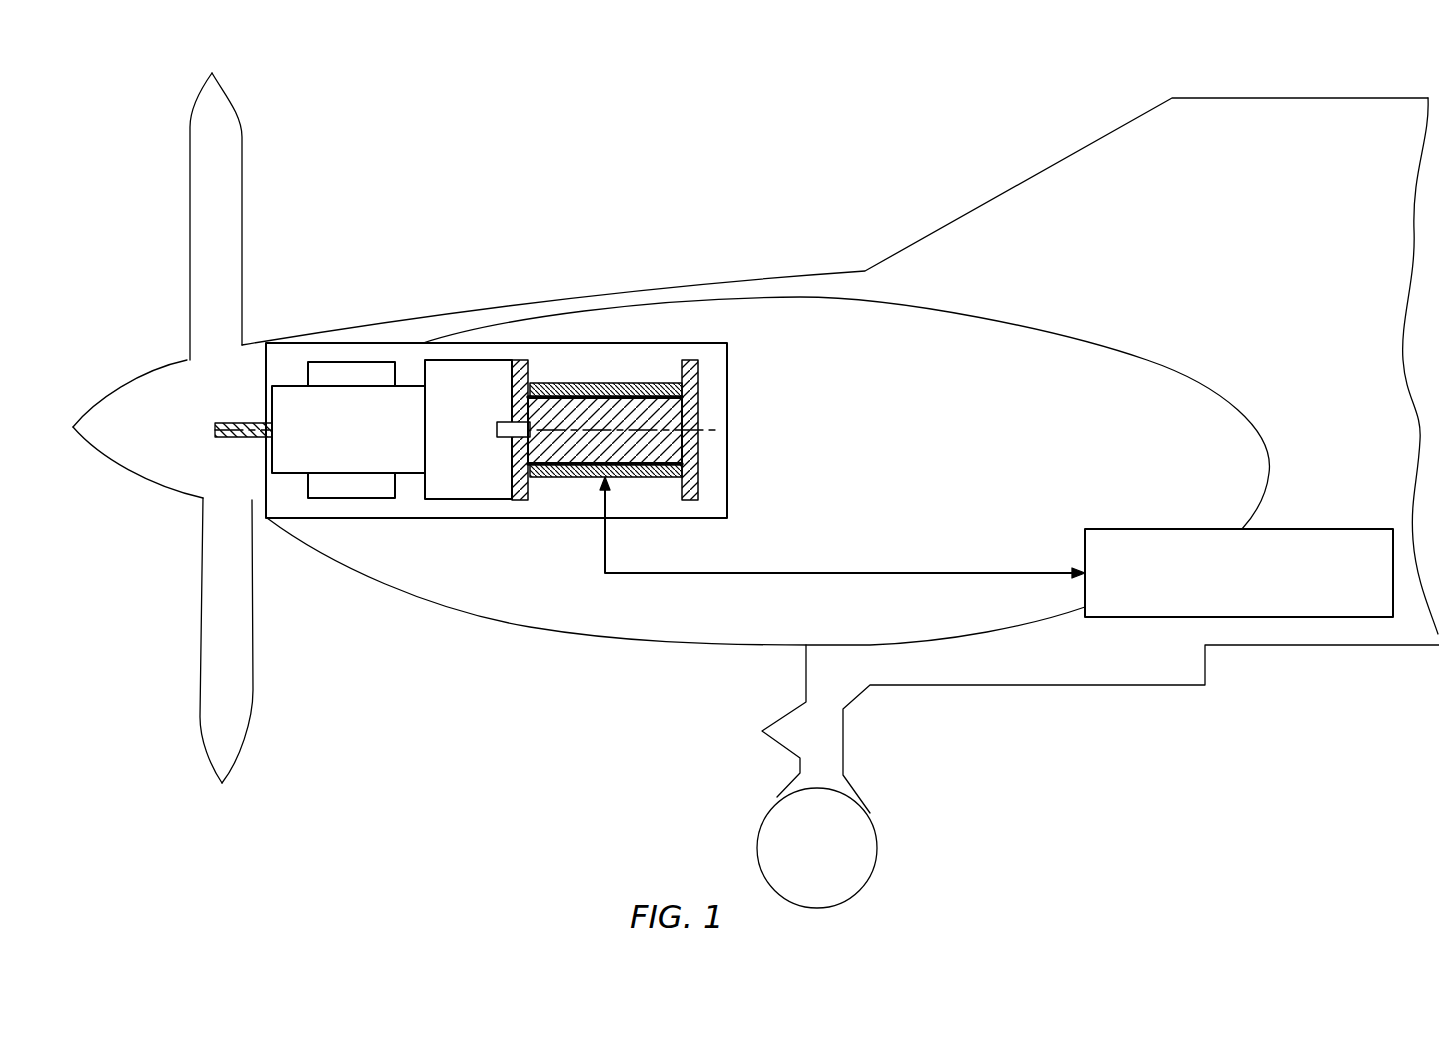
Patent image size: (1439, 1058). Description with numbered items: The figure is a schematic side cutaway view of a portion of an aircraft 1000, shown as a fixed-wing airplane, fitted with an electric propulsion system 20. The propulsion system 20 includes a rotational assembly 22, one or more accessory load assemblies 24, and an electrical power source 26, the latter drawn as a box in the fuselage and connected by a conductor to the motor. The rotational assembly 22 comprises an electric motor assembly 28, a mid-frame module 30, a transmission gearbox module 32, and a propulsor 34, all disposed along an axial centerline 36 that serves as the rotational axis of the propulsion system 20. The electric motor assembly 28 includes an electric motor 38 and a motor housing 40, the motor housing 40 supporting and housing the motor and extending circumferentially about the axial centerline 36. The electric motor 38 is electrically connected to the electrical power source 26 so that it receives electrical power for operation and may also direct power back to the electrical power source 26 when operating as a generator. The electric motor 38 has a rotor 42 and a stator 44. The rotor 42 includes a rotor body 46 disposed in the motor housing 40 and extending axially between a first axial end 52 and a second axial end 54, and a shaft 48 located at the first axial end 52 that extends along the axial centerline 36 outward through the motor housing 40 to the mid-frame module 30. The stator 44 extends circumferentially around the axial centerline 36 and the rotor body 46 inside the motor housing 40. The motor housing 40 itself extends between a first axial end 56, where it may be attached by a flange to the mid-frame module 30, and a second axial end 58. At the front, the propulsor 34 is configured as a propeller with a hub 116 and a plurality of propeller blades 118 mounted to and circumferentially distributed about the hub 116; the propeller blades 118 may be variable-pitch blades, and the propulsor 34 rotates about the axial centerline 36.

The aircraft 1000 is at (756, 487).
The hub 116 is at (170, 390).
The propeller blades 118 is at (222, 183).
The propulsor 34 is at (218, 547).
The rotational assembly 22 is at (507, 397).
The electric motor assembly 28 is at (573, 353).
The shaft 48 is at (505, 427).
The transmission gearbox module 32 is at (298, 405).
The accessory load assemblies 24 is at (351, 375).
The mid-frame module 30 is at (453, 485).
The propulsion system 20 is at (632, 409).
The first axial end of the motor housing 56 is at (514, 448).
The first axial end of the rotor body 52 is at (528, 440).
The stator 44 is at (600, 385).
The rotor body 46 is at (630, 457).
The electric motor 38 is at (682, 406).
The second axial end of the rotor body 54 is at (698, 421).
The second axial end of the motor housing 58 is at (658, 432).
The axial centerline 36 is at (695, 479).
The motor housing 40 is at (688, 373).
The rotor 42 is at (568, 453).
The electrical power source 26 is at (1273, 617).